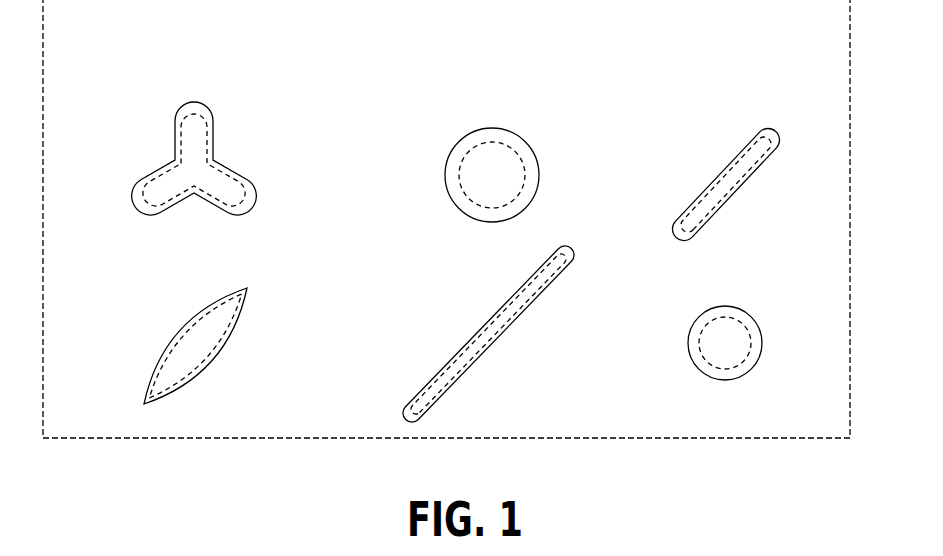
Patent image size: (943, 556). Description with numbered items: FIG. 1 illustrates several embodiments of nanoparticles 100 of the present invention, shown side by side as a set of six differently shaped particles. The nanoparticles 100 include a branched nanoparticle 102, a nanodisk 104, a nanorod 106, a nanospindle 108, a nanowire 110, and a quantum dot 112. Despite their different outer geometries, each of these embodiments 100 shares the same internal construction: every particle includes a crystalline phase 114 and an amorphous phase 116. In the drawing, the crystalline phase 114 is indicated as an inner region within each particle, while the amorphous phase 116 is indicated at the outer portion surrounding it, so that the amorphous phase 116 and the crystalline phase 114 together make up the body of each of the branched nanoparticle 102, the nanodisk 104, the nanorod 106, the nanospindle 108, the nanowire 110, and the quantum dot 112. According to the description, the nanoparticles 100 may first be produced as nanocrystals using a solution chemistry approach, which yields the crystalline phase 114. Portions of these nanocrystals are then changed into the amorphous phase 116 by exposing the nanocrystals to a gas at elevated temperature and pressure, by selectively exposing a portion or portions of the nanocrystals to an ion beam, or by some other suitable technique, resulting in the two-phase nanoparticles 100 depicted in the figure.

The nanoparticles 100 is at (742, 440).
The branched nanoparticle 102 is at (145, 92).
The nanodisk 104 is at (450, 95).
The nanorod 106 is at (715, 100).
The nanospindle 108 is at (147, 304).
The nanowire 110 is at (465, 304).
The quantum dot 112 is at (687, 308).
The crystalline phase 114 is at (219, 129).
The amorphous phase 116 is at (258, 187).